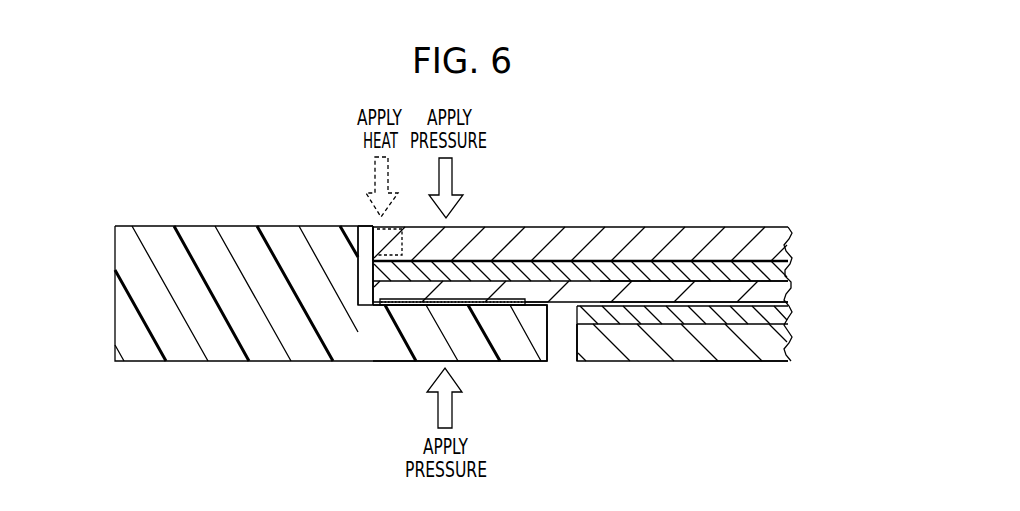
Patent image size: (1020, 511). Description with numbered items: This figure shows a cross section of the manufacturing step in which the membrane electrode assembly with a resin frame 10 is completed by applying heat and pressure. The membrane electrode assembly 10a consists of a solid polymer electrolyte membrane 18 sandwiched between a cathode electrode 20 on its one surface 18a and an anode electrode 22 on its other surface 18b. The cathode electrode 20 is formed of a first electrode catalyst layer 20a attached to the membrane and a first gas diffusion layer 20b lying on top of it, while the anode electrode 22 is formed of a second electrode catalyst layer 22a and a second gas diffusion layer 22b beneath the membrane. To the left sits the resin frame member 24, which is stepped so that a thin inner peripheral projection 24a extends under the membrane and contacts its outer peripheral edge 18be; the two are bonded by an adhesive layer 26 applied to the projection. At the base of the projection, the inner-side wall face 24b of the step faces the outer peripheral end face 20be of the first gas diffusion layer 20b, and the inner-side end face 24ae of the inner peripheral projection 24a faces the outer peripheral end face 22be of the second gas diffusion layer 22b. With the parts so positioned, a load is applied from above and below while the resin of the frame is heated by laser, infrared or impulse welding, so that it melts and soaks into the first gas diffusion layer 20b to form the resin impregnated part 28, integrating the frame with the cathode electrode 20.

The membrane electrode assembly with a resin frame 10 is at (556, 96).
The membrane electrode assembly 10a is at (790, 397).
The solid polymer electrolyte membrane 18 is at (782, 292).
The one surface of the solid polymer electrolyte membrane 18a is at (706, 281).
The other surface of the solid polymer electrolyte membrane 18b is at (703, 304).
The outer peripheral edge of the solid polymer electrolyte membrane 18be is at (500, 300).
The cathode electrode 20 is at (567, 231).
The first electrode catalyst layer 20a is at (783, 269).
The first gas diffusion layer 20b is at (783, 242).
The outer peripheral end face of the first gas diffusion layer 20be is at (372, 251).
The anode electrode 22 is at (695, 361).
The second electrode catalyst layer 22a is at (785, 313).
The second gas diffusion layer 22b is at (782, 341).
The outer peripheral end face of the second gas diffusion layer 22be is at (577, 350).
The resin frame member 24 is at (109, 356).
The inner peripheral projection 24a is at (398, 362).
The inner-side end face of the inner peripheral projection 24ae is at (550, 332).
The inner-side wall face 24b is at (367, 225).
The adhesive layer 26 is at (473, 300).
The resin impregnated part 28 is at (392, 243).